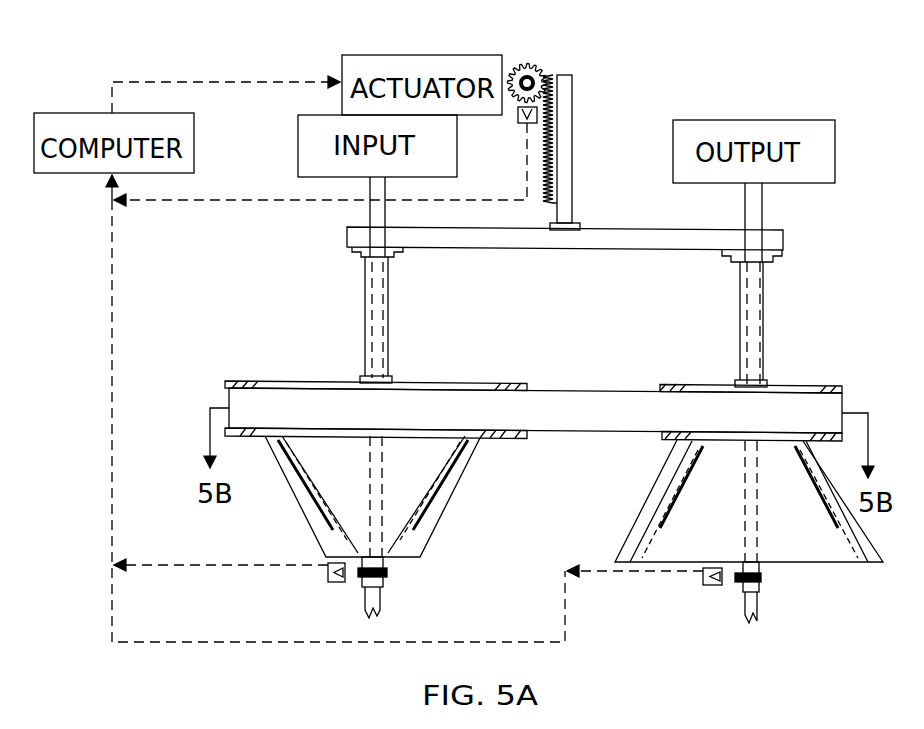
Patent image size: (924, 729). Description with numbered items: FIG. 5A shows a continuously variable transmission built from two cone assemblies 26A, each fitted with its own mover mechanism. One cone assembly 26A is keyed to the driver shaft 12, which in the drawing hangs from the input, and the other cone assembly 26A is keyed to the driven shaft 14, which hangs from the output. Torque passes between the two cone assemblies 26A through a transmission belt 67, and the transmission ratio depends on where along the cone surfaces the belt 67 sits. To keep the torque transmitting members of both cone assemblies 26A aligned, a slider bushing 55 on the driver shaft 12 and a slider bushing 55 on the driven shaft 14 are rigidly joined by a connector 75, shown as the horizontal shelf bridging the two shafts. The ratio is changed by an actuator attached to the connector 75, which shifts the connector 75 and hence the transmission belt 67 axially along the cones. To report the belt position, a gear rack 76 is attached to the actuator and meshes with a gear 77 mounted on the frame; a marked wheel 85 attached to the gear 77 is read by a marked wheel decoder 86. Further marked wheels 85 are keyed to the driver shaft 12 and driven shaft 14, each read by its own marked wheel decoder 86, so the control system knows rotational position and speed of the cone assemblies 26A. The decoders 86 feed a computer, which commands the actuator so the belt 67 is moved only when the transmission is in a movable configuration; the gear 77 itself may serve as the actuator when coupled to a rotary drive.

The driver shaft 12 is at (378, 188).
The driven shaft 14 is at (752, 208).
The cone assembly 26A is at (427, 468).
The slider bushing 55 is at (366, 318).
The transmission belt 67 is at (540, 403).
The connector 75 is at (420, 238).
The gear rack 76 is at (556, 143).
The gear 77 is at (545, 76).
The marked wheel 85 is at (522, 70).
The marked wheel decoder 86 is at (326, 575).